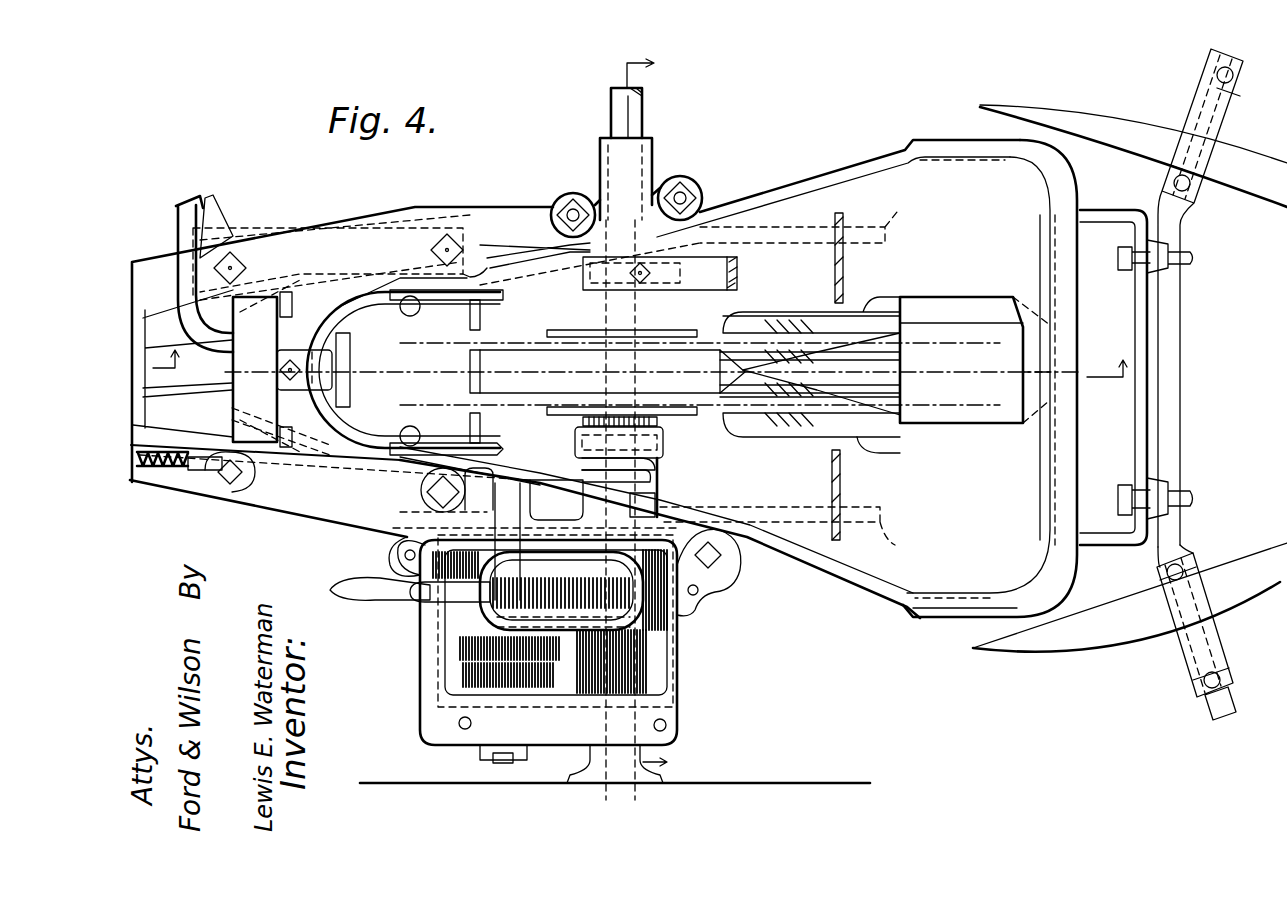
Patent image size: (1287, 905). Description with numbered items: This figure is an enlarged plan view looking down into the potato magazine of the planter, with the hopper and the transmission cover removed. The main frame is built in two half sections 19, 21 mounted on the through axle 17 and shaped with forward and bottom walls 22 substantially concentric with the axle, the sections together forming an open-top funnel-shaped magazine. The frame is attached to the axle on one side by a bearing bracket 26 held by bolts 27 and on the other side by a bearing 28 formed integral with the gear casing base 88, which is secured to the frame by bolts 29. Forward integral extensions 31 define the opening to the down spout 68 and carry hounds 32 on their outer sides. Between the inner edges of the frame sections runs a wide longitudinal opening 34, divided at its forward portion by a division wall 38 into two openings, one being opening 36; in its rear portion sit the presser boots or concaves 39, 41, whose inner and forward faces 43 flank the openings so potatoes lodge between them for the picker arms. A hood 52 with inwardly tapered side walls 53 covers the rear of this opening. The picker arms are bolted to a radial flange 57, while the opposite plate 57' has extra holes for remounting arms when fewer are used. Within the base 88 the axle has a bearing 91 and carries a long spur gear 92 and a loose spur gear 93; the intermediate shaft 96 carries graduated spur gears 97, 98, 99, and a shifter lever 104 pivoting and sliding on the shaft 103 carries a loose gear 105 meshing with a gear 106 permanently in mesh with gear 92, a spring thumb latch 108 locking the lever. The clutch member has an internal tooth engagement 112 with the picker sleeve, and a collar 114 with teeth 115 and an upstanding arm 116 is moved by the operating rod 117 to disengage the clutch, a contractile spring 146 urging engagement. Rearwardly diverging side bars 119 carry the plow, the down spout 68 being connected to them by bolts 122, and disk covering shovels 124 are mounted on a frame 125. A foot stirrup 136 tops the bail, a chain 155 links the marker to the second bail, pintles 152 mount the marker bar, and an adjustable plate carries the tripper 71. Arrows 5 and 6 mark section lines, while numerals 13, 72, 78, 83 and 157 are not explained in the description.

The section line 5 is at (640, 375).
The section line 6 is at (628, 419).
The housing 13 is at (990, 378).
The through axle 17 is at (640, 103).
The frame half section 19 is at (800, 540).
The frame half section 21 is at (822, 190).
The forward and bottom walls 22 is at (560, 286).
The bearing bracket 26 is at (655, 162).
The bolts 27 is at (690, 192).
The bearing 28 is at (662, 492).
The bolts 29 is at (421, 492).
The forward integral extensions 31 is at (280, 240).
The hounds 32 is at (155, 266).
The opening 34 is at (718, 415).
The opening 36 is at (478, 402).
The division wall 38 is at (709, 371).
The presser boot or concave 39 is at (885, 437).
The presser boot or concave 41 is at (880, 312).
The inner and forward faces 43 is at (790, 330).
The hood 52 is at (975, 360).
The side walls 53 is at (605, 380).
The radial flange 57 is at (544, 372).
The plate 57' is at (515, 372).
The down spout 68 is at (403, 370).
The tripper 71 is at (350, 368).
The inner wall 72 is at (1050, 480).
The baffle plate 78 is at (835, 222).
The cross block 83 is at (649, 289).
The base 88 is at (680, 688).
The bearing 91 is at (675, 712).
The spur gear 92 is at (650, 628).
The spur gear 93 is at (700, 592).
The intermediate shaft 96 is at (490, 758).
The spur gear 97 is at (460, 680).
The spur gear 98 is at (458, 655).
The spur gear 99 is at (460, 628).
The shaft 103 is at (615, 645).
The lever 104 is at (330, 590).
The loose spur gear 105 is at (392, 575).
The gear 106 is at (585, 590).
The spring thumb latch 108 is at (420, 602).
The internal tooth engagement 112 is at (582, 425).
The collar 114 is at (665, 432).
The teeth 115 is at (660, 472).
The upstanding arm 116 is at (580, 458).
The operating rod 117 is at (302, 505).
The side bars 119 is at (793, 373).
The bolts 122 is at (408, 315).
The disk covering shovels 124 is at (1130, 125).
The frame 125 is at (1136, 392).
The foot stirrup 136 is at (140, 200).
The contractile spring 146 is at (175, 470).
The pintles 152 is at (258, 298).
The chain 155 is at (308, 275).
The block 157 is at (250, 392).